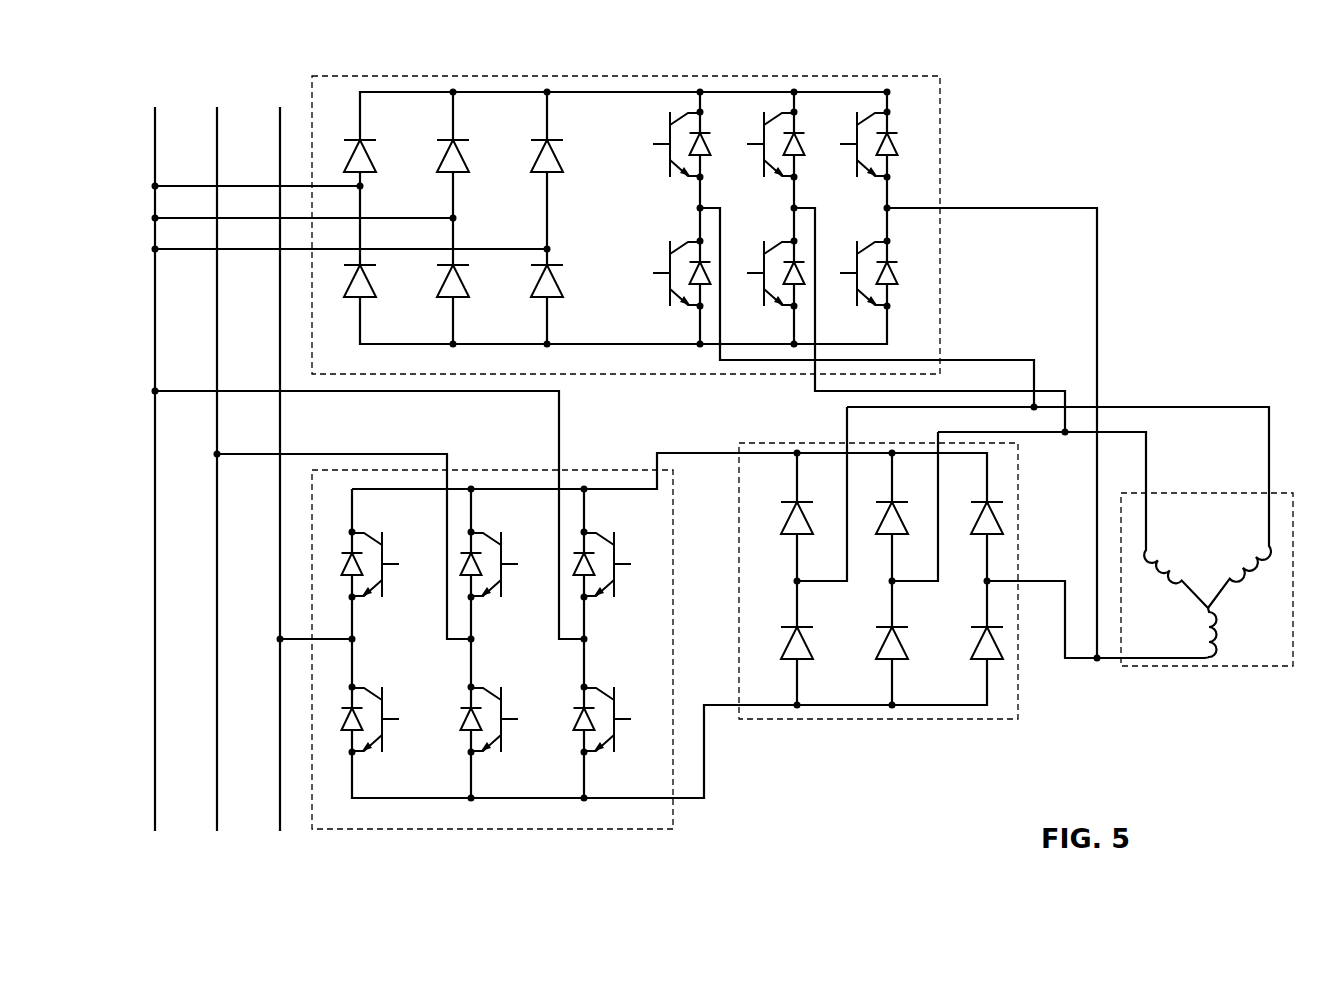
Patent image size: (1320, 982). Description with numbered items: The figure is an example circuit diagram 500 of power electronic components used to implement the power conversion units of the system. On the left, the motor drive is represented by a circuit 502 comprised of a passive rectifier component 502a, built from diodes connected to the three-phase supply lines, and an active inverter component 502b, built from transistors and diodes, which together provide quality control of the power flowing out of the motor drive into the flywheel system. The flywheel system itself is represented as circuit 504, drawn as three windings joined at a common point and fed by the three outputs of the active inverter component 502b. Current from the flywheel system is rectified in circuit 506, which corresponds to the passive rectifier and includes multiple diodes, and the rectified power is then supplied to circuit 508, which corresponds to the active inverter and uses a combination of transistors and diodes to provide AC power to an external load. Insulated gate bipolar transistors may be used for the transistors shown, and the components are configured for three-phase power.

The circuit diagram 500 is at (1168, 104).
The circuit 502 is at (940, 122).
The passive rectifier component 502a is at (370, 108).
The active inverter component 502b is at (835, 122).
The circuit 504 is at (1228, 667).
The circuit 506 is at (1018, 706).
The circuit 508 is at (673, 815).